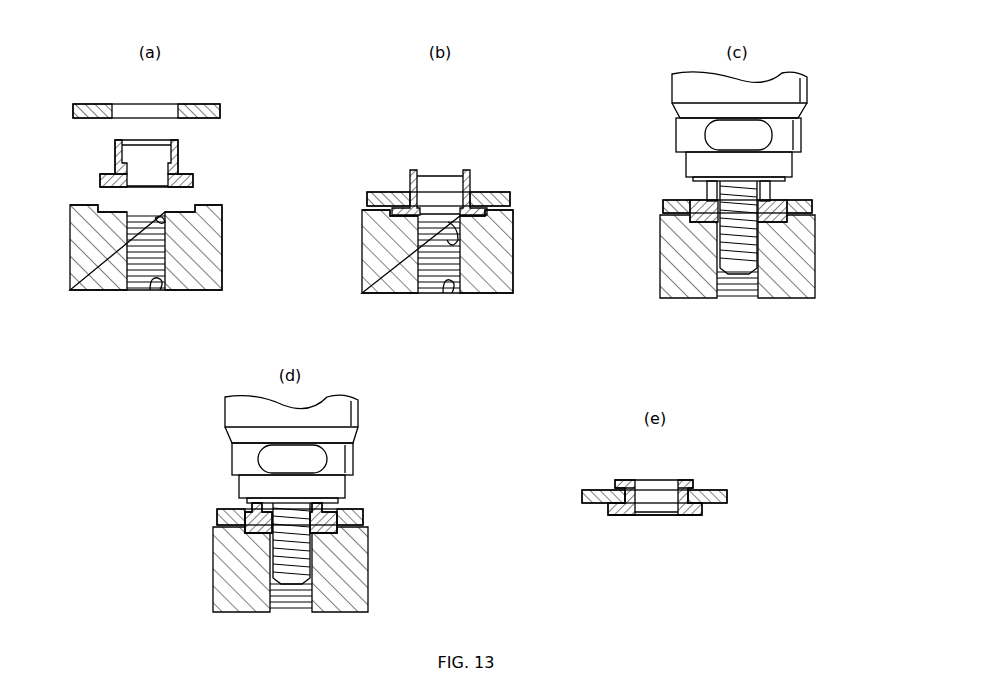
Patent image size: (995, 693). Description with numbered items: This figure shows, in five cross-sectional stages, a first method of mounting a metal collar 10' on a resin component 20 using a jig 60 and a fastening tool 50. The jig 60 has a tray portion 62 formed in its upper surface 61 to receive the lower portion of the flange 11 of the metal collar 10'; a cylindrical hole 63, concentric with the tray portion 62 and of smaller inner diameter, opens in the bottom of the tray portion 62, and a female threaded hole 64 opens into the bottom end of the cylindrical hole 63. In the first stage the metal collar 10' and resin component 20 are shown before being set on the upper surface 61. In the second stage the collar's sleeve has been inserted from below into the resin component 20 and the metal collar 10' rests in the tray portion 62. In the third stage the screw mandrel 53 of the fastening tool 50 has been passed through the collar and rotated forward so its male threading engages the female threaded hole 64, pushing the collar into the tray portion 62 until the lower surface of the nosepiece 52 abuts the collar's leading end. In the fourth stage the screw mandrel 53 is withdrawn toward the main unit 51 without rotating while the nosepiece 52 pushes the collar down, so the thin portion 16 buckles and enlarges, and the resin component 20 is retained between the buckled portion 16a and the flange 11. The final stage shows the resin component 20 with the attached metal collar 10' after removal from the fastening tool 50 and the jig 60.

The metal collar 10' is at (476, 323).
The flange 11 is at (185, 177).
The thin portion 16 is at (116, 148).
The buckled portion 16a is at (325, 506).
The resin component 20 is at (203, 104).
The fastening tool 50 is at (815, 94).
The main unit 51 is at (802, 135).
The nosepiece 52 is at (792, 173).
The screw mandrel 53 is at (750, 245).
The jig 60 is at (225, 221).
The upper surface 61 is at (90, 205).
The tray portion 62 is at (185, 207).
The cylindrical hole 63 is at (160, 226).
The female threaded hole 64 is at (155, 291).